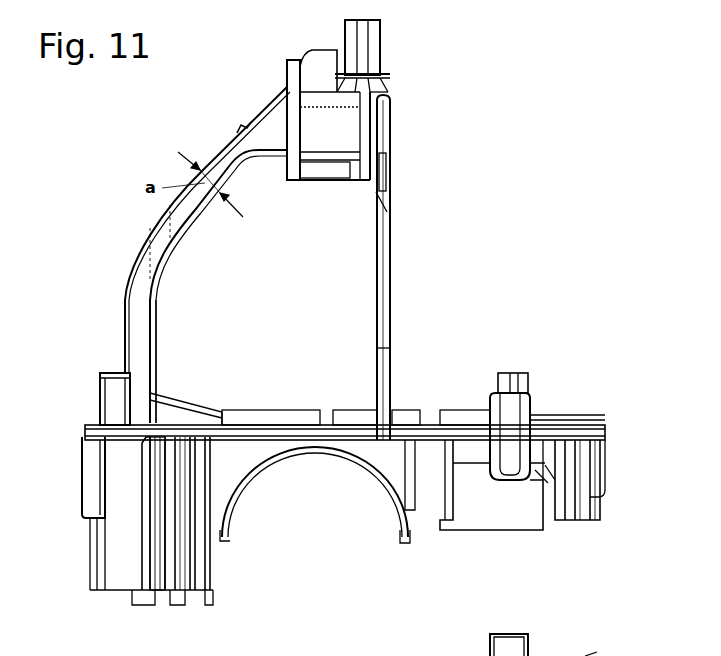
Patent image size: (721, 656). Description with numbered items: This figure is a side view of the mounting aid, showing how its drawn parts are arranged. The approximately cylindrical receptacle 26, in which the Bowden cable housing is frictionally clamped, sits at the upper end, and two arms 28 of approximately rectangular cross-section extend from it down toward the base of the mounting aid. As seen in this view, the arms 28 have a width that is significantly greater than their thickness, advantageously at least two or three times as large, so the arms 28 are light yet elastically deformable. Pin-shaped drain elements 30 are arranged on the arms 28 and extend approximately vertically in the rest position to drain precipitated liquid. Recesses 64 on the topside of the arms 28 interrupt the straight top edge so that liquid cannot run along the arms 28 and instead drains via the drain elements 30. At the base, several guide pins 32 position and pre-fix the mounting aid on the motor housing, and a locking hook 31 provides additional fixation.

The receptacle 26 is at (375, 50).
The arms 28 is at (140, 283).
The drain elements 30 is at (367, 170).
The locking hook 31 is at (508, 467).
The guide pins 32 is at (90, 498).
The recesses 64 is at (590, 655).